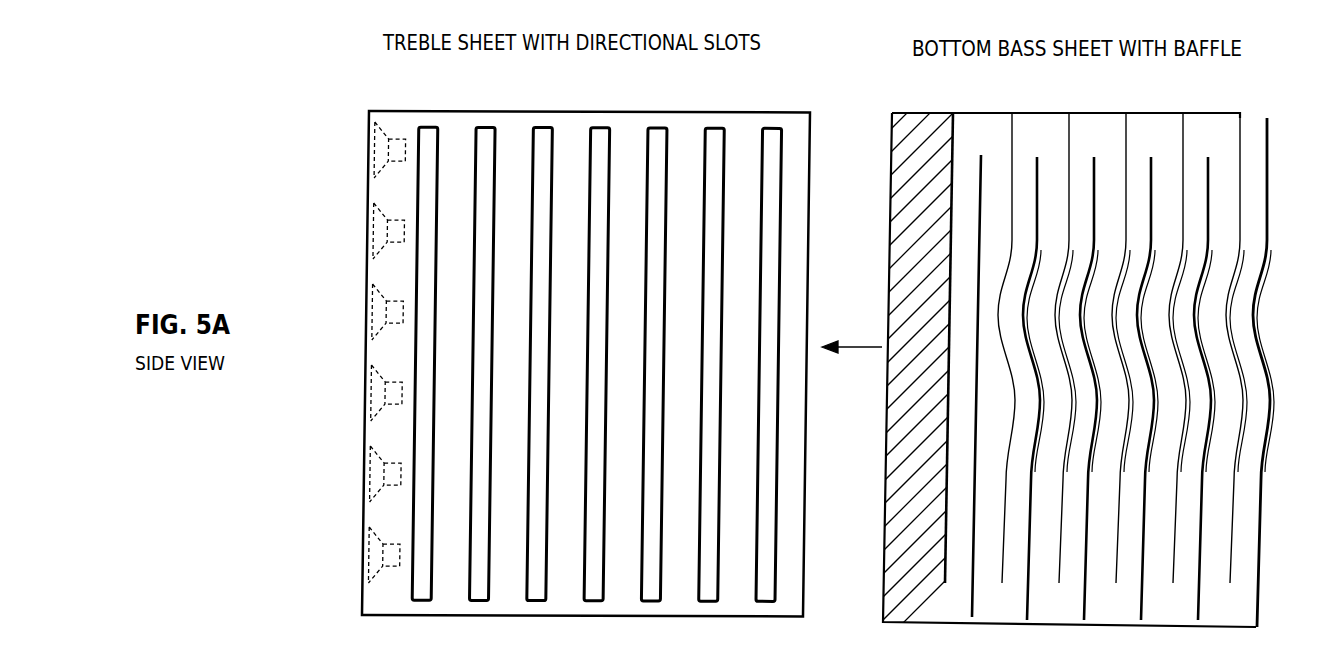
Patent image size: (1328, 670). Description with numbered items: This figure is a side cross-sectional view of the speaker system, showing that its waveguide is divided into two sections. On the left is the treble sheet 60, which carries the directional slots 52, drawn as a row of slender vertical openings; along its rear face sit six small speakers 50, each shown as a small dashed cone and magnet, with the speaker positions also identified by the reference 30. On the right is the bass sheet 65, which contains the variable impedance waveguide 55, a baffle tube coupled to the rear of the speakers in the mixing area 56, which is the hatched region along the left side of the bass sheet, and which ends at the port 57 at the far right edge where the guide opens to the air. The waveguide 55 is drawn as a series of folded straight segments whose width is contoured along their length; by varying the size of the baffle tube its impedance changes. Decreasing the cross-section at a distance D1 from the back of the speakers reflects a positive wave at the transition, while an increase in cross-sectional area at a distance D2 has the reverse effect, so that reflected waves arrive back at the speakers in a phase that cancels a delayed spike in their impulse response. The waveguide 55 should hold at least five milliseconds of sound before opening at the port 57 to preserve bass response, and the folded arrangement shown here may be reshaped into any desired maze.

The tweeters / speakers 30 is at (367, 298).
The small speakers 50 is at (363, 545).
The directional slots 52 is at (541, 124).
The treble sheet 60 is at (789, 111).
The bass sheet 65 is at (1082, 128).
The variable impedance waveguide 55 is at (1060, 602).
The mixing area 56 is at (910, 605).
The port 57 is at (1257, 118).
The distance D1 is at (992, 331).
The distance D2 is at (1005, 412).